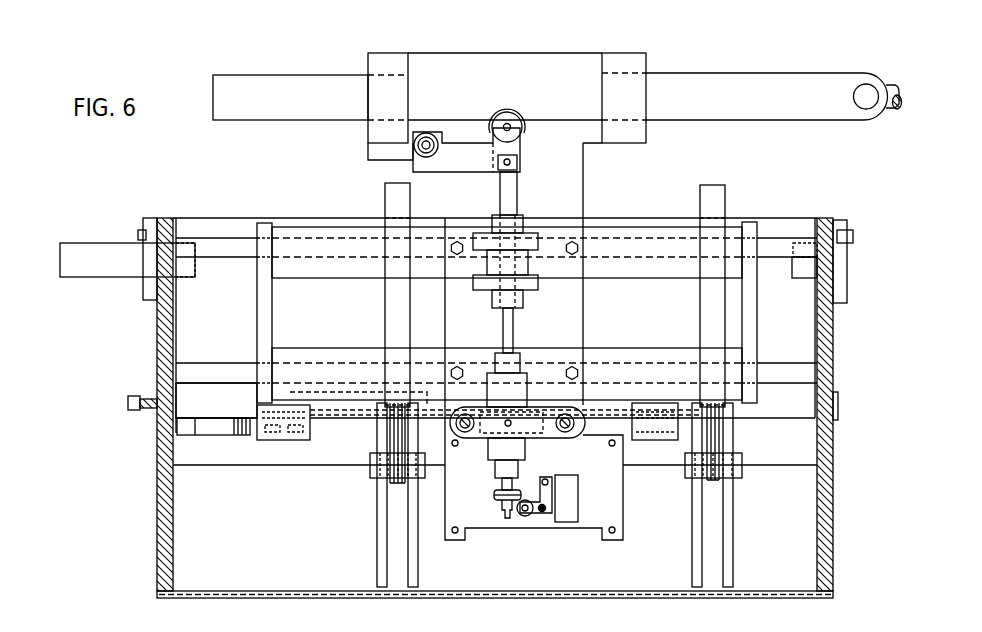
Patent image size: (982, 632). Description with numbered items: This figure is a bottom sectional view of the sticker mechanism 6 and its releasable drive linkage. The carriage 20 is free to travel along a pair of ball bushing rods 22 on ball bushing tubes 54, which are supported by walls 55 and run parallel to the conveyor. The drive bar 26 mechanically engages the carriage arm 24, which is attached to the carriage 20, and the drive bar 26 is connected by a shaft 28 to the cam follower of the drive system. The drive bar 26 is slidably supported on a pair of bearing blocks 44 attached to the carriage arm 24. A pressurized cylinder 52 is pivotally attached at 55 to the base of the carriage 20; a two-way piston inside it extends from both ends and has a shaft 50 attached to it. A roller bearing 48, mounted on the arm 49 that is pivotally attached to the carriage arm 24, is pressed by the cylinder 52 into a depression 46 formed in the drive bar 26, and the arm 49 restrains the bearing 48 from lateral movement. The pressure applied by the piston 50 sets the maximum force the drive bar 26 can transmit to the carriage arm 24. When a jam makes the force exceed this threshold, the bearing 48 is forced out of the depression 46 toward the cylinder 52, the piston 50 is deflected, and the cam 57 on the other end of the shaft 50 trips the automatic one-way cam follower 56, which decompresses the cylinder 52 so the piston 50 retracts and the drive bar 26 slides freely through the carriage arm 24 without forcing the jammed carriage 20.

The sticker mechanism 6 is at (622, 598).
The carriage 20 is at (617, 293).
The ball bushing rods 22 is at (224, 250).
The carriage arm 24 is at (368, 155).
The drive bar 26 is at (752, 74).
The shaft 28 is at (893, 110).
The bearing blocks 44 is at (375, 65).
The depression 46 is at (512, 112).
The roller bearing 48 is at (522, 128).
The arm 49 is at (468, 157).
The shaft 50 is at (520, 185).
The pressurized cylinder 52 is at (525, 447).
The ball bushing tubes 54 is at (328, 350).
The walls 55 is at (157, 350).
The one-way cam follower 56 is at (531, 516).
The cam 57 is at (493, 497).